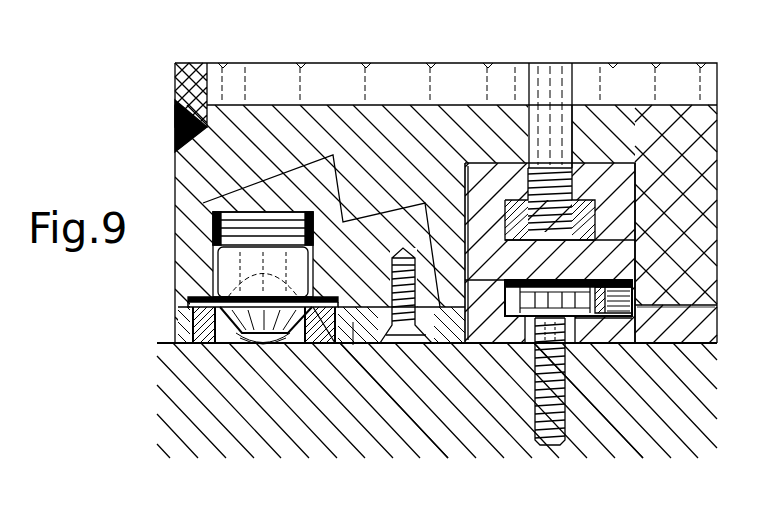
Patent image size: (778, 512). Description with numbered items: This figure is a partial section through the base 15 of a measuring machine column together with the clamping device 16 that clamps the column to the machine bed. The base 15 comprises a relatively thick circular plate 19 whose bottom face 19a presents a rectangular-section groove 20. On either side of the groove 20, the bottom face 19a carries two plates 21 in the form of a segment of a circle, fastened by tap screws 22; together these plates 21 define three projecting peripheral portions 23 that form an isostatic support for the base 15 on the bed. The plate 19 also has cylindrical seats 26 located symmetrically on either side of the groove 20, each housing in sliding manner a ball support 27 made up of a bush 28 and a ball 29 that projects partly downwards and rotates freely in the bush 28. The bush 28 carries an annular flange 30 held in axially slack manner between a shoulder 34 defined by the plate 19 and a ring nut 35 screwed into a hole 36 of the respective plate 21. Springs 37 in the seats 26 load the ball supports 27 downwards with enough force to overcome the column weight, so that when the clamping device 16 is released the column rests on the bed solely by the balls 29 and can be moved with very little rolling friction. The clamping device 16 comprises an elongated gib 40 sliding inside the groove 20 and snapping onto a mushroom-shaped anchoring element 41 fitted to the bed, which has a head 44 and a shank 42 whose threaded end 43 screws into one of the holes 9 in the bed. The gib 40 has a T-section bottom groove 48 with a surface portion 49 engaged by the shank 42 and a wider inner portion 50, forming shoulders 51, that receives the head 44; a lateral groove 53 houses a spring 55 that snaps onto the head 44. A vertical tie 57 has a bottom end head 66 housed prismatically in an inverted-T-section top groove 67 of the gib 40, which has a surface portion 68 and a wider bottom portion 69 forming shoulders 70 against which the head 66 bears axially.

The holes 9 is at (590, 353).
The base 15 is at (172, 168).
The clamping device 16 is at (648, 382).
The circular plate 19 is at (688, 216).
The bottom face 19a is at (693, 326).
The groove 20 is at (600, 175).
The plates 21 is at (358, 345).
The tap screws 22 is at (427, 345).
The projecting peripheral portions 23 is at (403, 345).
The cylindrical seats 26 is at (238, 276).
The ball support 27 is at (262, 346).
The bush 28 is at (242, 272).
The ball 29 is at (223, 354).
The annular flange 30 is at (188, 303).
The shoulder 34 is at (320, 342).
The ring nut 35 is at (350, 345).
The hole 36 is at (238, 344).
The springs 37 is at (258, 225).
The gib 40 is at (482, 188).
The anchoring element 41 is at (597, 350).
The shank 42 is at (682, 362).
The threaded end 43 is at (578, 346).
The head 44 is at (652, 348).
The bottom groove 48 is at (546, 402).
The surface portion 49 is at (556, 346).
The inner portion 50 is at (503, 330).
The shoulders 51 is at (473, 165).
The lateral groove 53 is at (638, 280).
The spring 55 is at (633, 298).
The tie 57 is at (546, 93).
The bottom end head 66 is at (598, 205).
The top groove 67 is at (498, 215).
The surface portion 68 is at (550, 178).
The bottom portion 69 is at (638, 238).
The shoulders 70 is at (615, 170).